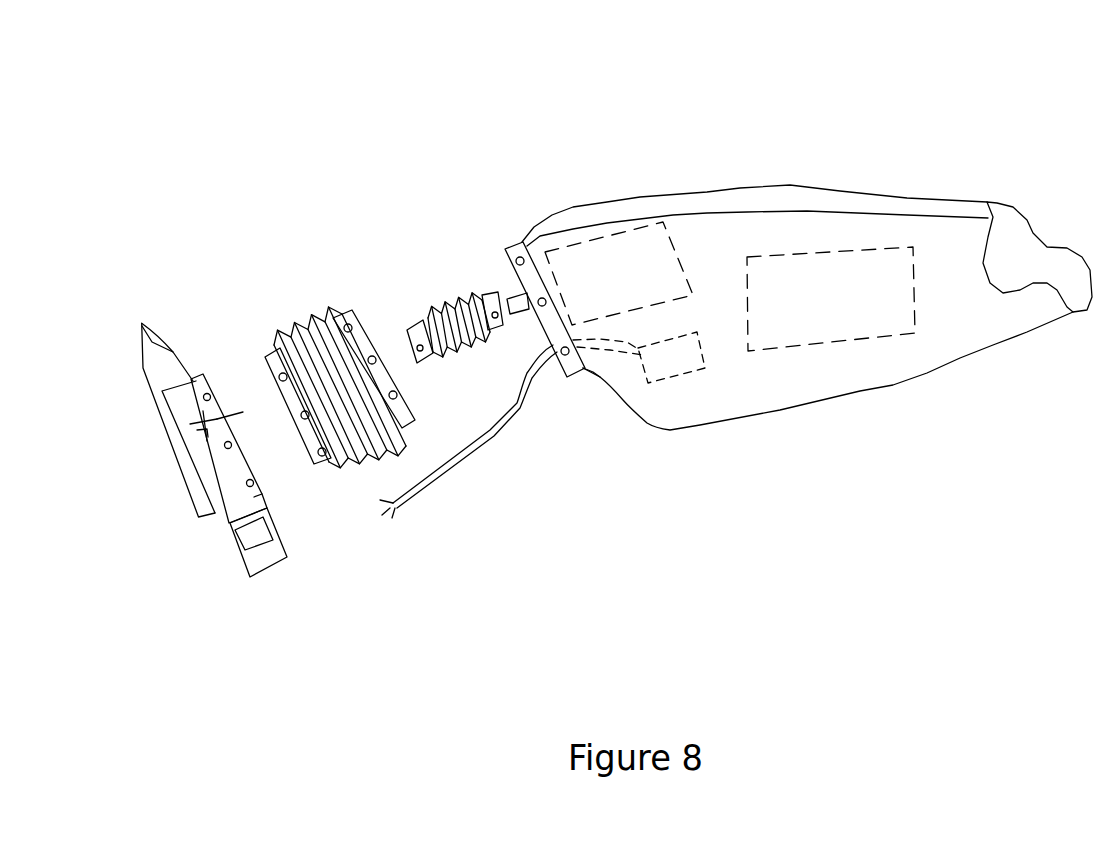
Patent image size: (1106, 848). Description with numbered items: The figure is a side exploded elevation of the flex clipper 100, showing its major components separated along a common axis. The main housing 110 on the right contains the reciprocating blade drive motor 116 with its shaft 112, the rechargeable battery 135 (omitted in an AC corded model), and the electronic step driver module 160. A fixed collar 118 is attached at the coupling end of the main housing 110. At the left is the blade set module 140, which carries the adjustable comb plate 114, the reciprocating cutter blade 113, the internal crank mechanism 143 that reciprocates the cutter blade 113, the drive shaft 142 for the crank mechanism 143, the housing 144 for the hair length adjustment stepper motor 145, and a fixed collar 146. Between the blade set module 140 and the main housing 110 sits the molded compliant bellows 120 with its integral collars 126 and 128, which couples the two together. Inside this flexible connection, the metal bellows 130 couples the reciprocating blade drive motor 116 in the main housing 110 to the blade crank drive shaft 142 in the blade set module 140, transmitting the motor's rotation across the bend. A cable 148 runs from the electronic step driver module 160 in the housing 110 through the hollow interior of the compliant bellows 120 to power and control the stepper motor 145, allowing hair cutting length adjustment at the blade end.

The flex clipper 100 is at (760, 68).
The main housing 110 is at (826, 203).
The shaft 112 is at (518, 325).
The reciprocating cutter blade 113 is at (172, 353).
The adjustable comb plate 114 is at (150, 363).
The reciprocating blade drive motor 116 is at (615, 297).
The fixed collar 118 is at (558, 367).
The molded compliant bellows 120 is at (340, 372).
The integral collar 126 is at (336, 462).
The integral collar 128 is at (338, 312).
The metal bellows 130 is at (447, 297).
The rechargeable battery 135 is at (876, 331).
The blade set module 140 is at (180, 448).
The drive shaft 142 is at (243, 412).
The internal crank mechanism 143 is at (192, 425).
The housing for hair length adjustment stepper motor 144 is at (258, 556).
The hair length adjustment stepper motor 145 is at (237, 552).
The fixed collar 146 is at (192, 376).
The cable 148 is at (489, 452).
The electronic step driver module 160 is at (677, 370).